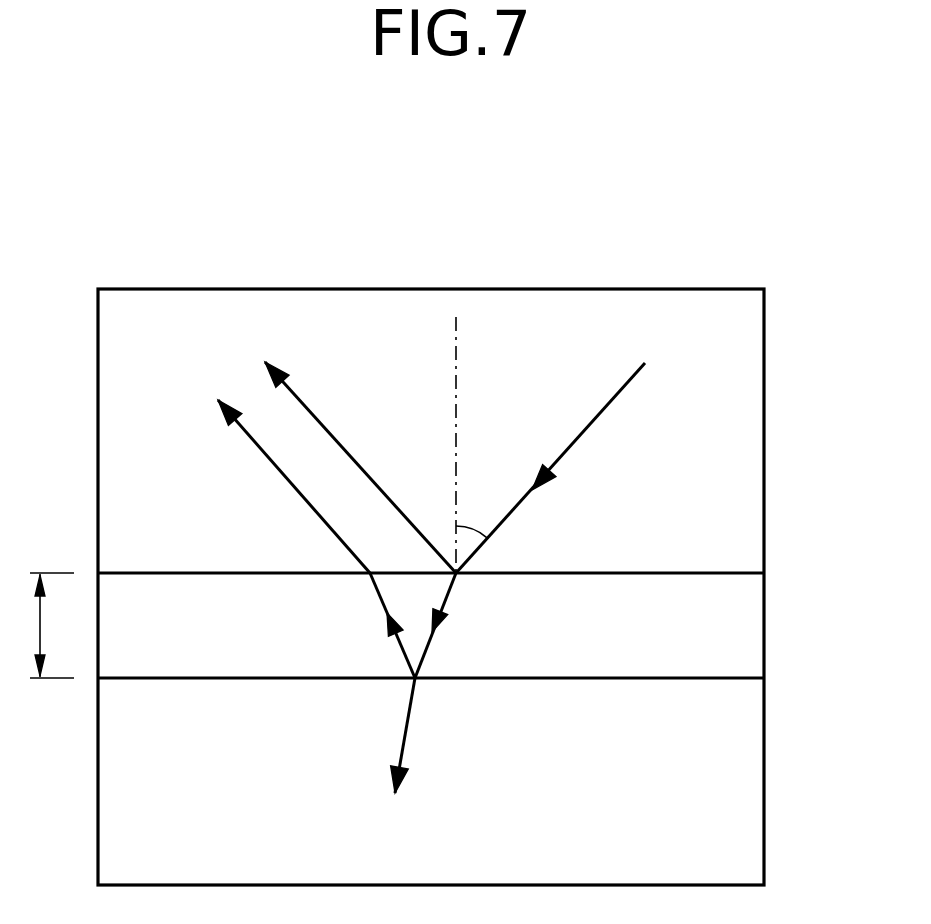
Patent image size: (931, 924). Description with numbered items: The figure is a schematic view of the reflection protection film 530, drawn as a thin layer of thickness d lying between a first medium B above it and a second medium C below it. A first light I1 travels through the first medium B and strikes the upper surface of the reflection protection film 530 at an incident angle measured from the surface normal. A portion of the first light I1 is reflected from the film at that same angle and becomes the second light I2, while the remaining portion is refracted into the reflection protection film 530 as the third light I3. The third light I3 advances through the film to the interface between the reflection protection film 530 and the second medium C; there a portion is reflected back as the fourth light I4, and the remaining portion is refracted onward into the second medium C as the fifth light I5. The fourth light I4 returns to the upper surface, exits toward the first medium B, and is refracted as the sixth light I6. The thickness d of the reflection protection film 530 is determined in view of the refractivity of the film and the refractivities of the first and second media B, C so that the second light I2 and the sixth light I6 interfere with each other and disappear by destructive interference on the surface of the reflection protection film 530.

The reflection protection film 530 is at (750, 632).
The first medium B is at (750, 520).
The second medium C is at (750, 790).
The thickness d is at (41, 625).
The first light I1 is at (574, 456).
The second light I2 is at (360, 454).
The third light I3 is at (448, 625).
The fourth light I4 is at (382, 625).
The fifth light I5 is at (418, 744).
The sixth light I6 is at (278, 486).